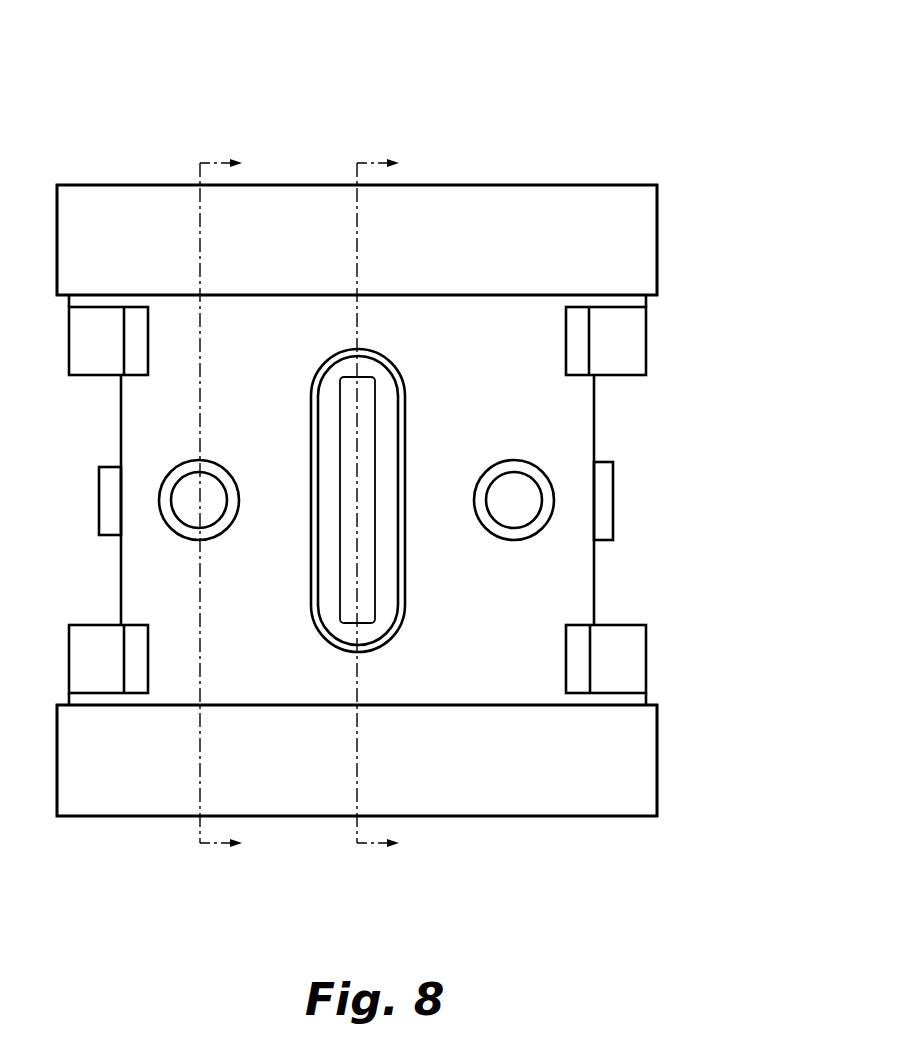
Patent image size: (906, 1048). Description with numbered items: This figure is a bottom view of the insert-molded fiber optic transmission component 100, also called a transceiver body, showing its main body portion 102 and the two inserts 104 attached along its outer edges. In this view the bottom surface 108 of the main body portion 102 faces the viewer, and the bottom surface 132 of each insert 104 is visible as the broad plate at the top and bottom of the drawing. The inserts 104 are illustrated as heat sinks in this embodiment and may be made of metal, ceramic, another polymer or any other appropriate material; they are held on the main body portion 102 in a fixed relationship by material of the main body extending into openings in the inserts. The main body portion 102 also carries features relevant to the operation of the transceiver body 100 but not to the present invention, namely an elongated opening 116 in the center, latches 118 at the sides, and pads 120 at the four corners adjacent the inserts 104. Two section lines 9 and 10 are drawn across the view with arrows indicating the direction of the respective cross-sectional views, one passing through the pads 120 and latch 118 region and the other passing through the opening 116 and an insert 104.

The insert-molded fiber optic transmission component 100 is at (403, 441).
The main body portion 102 is at (594, 420).
The insert 104 is at (657, 237).
The bottom surface 108 is at (480, 395).
The opening 116 is at (400, 368).
The latches 118 is at (613, 507).
The pads 120 is at (646, 661).
The bottom surface 132 is at (275, 250).
The section line 9- 9 is at (378, 506).
The section line 10- 10 is at (221, 506).